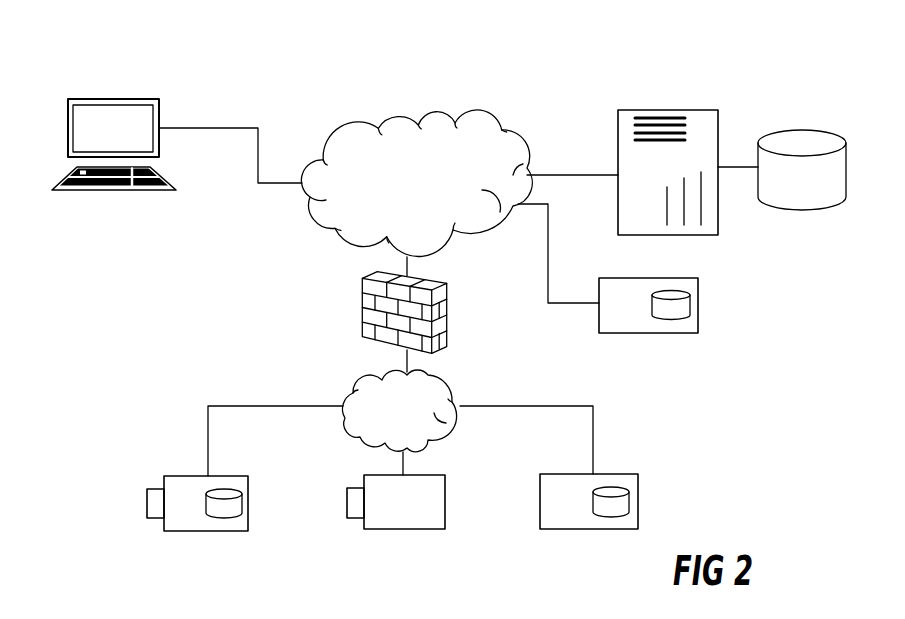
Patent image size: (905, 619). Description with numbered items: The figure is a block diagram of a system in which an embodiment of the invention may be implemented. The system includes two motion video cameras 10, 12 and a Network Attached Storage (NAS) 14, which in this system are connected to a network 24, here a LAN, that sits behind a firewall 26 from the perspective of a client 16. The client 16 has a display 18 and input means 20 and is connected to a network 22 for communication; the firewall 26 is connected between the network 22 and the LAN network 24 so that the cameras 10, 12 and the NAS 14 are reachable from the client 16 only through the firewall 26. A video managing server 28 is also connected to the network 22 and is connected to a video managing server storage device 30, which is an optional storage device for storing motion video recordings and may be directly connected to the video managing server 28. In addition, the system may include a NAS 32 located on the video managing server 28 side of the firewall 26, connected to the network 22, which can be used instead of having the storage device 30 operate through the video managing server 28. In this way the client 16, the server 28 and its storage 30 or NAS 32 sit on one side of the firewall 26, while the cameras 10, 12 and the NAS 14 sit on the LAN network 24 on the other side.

The motion video camera 10 is at (229, 523).
The motion video camera 12 is at (420, 518).
The Network Attached Storage (NAS) 14 is at (563, 523).
The client 16 is at (167, 88).
The display 18 is at (102, 120).
The input means 20 is at (165, 191).
The network 22 is at (485, 122).
The network (LAN) 24 is at (450, 384).
The firewall 26 is at (362, 311).
The video managing server 28 is at (718, 110).
The video managing server storage device 30 is at (808, 193).
The NAS 32 is at (622, 327).